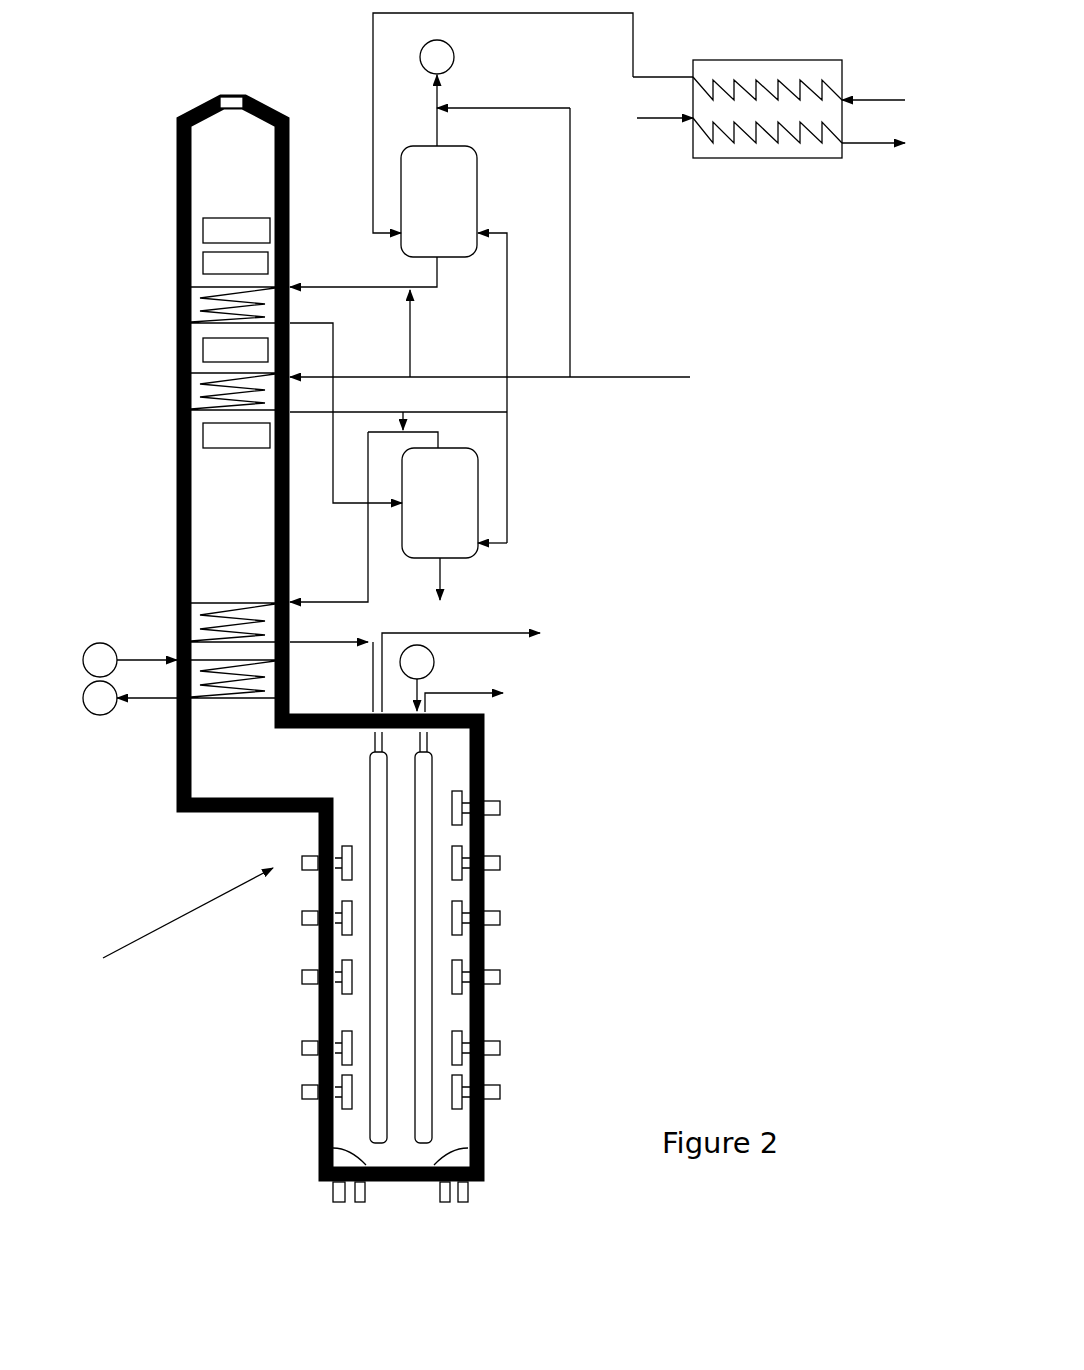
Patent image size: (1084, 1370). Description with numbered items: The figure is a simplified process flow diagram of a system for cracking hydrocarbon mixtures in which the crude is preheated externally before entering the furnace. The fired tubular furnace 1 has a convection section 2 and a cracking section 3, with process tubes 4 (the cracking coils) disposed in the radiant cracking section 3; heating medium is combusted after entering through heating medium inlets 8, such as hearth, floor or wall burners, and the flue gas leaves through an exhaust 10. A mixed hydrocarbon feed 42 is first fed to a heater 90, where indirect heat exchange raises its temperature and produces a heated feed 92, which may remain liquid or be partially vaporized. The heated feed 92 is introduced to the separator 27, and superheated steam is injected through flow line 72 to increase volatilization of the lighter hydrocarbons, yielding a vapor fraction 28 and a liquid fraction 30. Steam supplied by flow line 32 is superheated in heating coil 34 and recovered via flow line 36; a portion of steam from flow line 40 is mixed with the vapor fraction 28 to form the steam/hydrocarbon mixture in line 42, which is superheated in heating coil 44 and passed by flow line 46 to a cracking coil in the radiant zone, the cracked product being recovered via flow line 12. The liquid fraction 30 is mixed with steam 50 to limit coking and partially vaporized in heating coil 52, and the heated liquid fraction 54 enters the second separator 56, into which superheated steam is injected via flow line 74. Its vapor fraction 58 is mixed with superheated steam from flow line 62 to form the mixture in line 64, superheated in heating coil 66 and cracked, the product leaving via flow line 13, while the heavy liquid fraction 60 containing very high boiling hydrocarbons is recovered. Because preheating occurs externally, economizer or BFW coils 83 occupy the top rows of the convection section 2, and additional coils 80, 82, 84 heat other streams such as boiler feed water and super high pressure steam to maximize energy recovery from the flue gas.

The fired tubular furnace 1 is at (178, 926).
The convection section 2 is at (207, 490).
The cracking section 3 is at (362, 945).
The process tubes 4 is at (370, 785).
The heating medium inlets 8 is at (302, 1098).
The exhaust 10 is at (220, 98).
The flow line 12 is at (430, 688).
The flow line 13 is at (470, 630).
The separator 27 is at (439, 201).
The vapor fraction 28 is at (440, 128).
The liquid fraction 30 is at (440, 282).
The flow line 32 is at (640, 375).
The heating coil 34 is at (177, 412).
The flow line 36 is at (312, 418).
The flow line 40 is at (572, 180).
The steam/hydrocarbon mixture line 42 is at (140, 655).
The heating coil 44 is at (290, 660).
The flow line 46 is at (150, 703).
The steam 50 is at (412, 340).
The heating coil 52 is at (177, 323).
The heated liquid fraction 54 is at (335, 340).
The separator 56 is at (440, 503).
The vapor fraction 58 is at (440, 438).
The liquid fraction 60 is at (442, 580).
The flow line 62 is at (406, 415).
The steam/hydrocarbon mixture line 64 is at (380, 438).
The heating coil 66 is at (177, 603).
The flow line 72 is at (509, 258).
The flow line 74 is at (509, 485).
The coil 80 is at (235, 264).
The coil 82 is at (235, 350).
The BFW coils 83 is at (236, 231).
The coil 84 is at (236, 436).
The heater 90 is at (748, 58).
The heated feed 92 is at (645, 75).